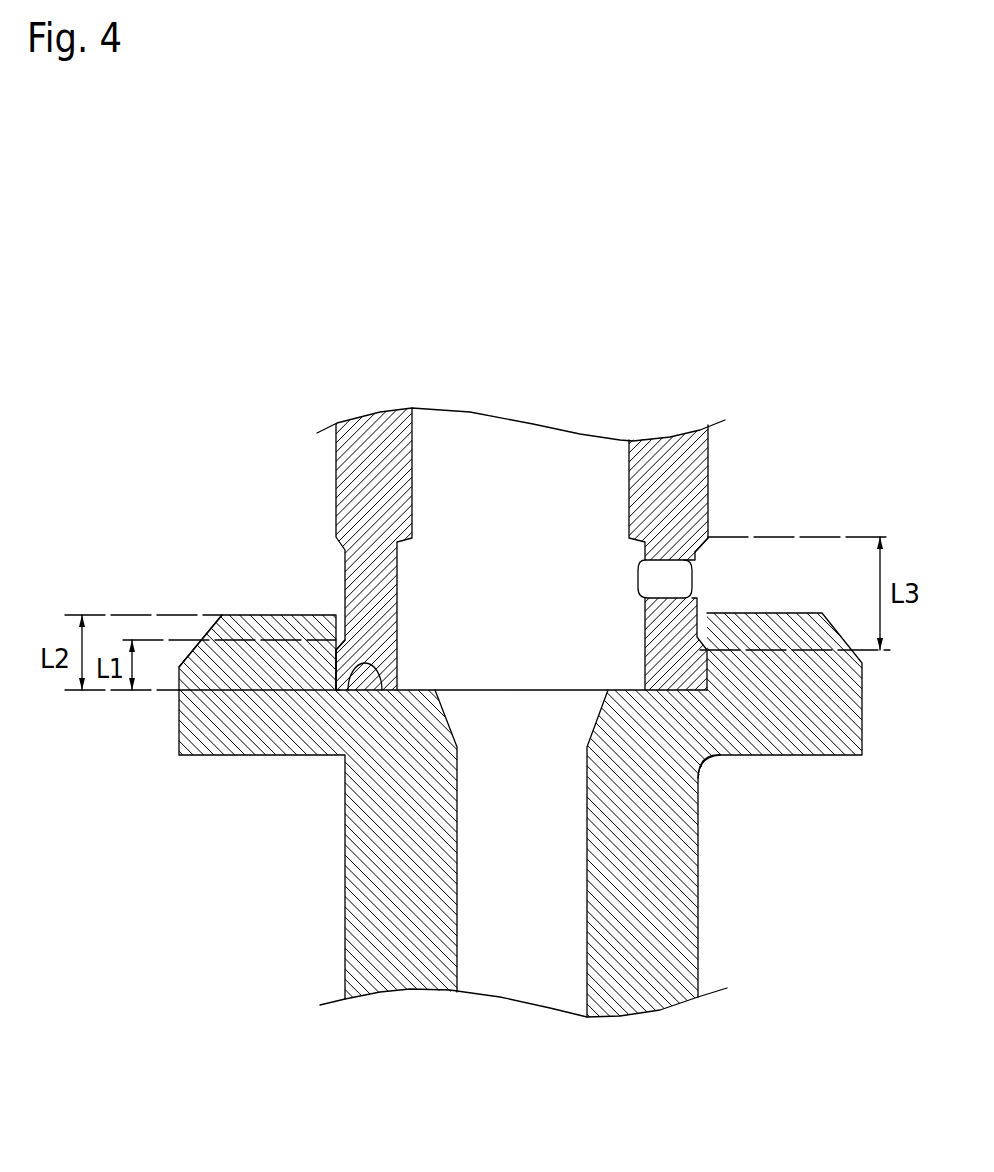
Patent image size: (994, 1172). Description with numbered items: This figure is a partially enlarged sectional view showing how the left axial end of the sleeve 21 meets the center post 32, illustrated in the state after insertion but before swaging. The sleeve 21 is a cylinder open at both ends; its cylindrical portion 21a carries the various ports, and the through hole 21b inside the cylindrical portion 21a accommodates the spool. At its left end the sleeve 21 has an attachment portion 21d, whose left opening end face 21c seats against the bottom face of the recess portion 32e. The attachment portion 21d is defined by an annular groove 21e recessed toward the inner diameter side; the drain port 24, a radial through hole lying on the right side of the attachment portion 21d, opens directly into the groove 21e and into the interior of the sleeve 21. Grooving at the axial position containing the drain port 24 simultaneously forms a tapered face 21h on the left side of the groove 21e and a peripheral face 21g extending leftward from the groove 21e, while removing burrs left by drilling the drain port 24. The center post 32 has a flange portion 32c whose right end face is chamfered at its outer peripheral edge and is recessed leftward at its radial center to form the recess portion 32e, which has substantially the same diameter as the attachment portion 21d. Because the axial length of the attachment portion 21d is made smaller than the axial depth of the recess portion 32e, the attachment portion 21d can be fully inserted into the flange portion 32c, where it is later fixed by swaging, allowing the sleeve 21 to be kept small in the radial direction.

The sleeve 21 is at (497, 710).
The cylindrical portion 21a is at (334, 503).
The through hole 21b is at (630, 490).
The opening end face 21c is at (740, 755).
The attachment portion 21d is at (231, 609).
The annular groove 21e is at (696, 552).
The peripheral face 21g is at (342, 656).
The tapered face 21h is at (330, 614).
The drain port 24 is at (690, 587).
The center post 32 is at (497, 810).
The flange portion 32c is at (195, 732).
The recess portion 32e is at (343, 694).